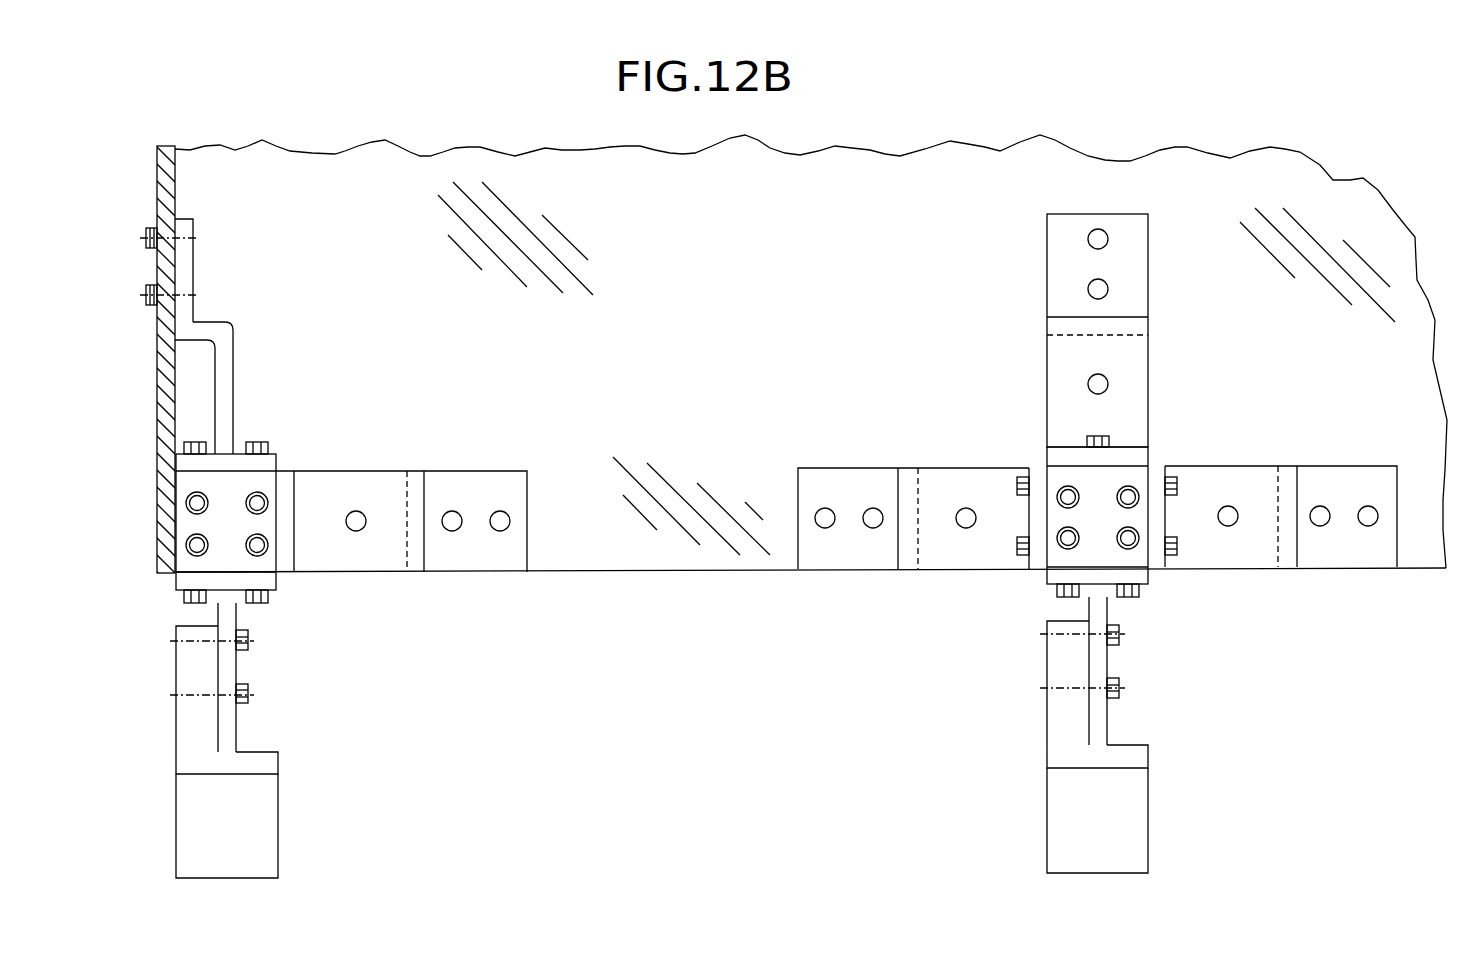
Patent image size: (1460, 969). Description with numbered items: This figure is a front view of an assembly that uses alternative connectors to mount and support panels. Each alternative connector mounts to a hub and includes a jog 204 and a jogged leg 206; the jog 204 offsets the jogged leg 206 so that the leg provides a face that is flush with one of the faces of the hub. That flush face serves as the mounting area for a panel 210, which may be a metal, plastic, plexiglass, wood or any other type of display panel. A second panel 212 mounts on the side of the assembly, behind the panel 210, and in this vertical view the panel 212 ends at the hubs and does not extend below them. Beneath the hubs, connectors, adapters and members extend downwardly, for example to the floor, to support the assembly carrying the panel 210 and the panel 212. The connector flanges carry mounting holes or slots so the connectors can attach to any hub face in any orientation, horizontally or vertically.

The jog 204 is at (208, 332).
The jogged leg 206 is at (186, 266).
The panel 210 is at (691, 367).
The panel 212 is at (165, 410).